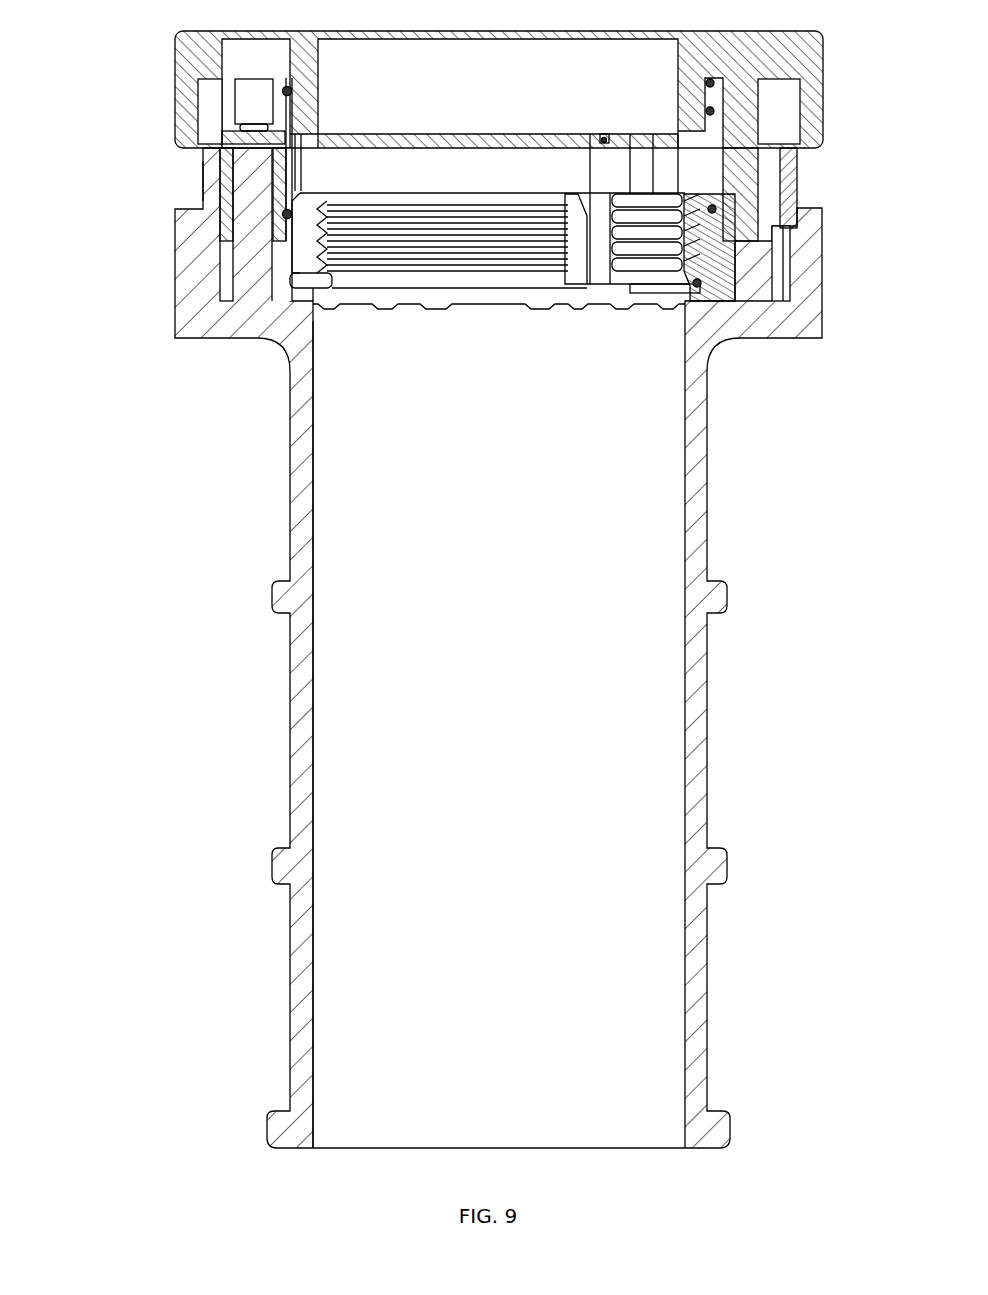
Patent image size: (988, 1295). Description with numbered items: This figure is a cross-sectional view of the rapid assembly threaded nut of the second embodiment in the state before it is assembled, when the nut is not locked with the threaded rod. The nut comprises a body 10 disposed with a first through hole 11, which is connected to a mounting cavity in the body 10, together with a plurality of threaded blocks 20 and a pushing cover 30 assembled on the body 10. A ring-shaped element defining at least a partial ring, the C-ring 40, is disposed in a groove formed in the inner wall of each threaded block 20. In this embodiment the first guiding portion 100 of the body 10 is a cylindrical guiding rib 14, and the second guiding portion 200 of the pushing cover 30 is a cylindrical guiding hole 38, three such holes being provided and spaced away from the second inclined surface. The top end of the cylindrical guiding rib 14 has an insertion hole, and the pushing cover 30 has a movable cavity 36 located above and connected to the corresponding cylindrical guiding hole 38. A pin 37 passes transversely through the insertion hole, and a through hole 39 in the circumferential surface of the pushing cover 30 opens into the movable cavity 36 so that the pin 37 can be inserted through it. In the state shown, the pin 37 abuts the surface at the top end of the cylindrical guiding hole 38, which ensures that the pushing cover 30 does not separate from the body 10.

The body 10 is at (705, 638).
The first through hole 11 is at (610, 827).
The cylindrical guiding rib 14 is at (207, 208).
The threaded block 20 is at (767, 240).
The pushing cover 30 is at (473, 145).
The movable cavity 36 is at (228, 95).
The pin 37 is at (190, 177).
The cylindrical guiding hole 38 is at (223, 177).
The through hole 39 is at (202, 75).
The C-ring 40 is at (703, 288).
The first guiding portion 100 is at (439, 648).
The second guiding portion 200 is at (202, 150).